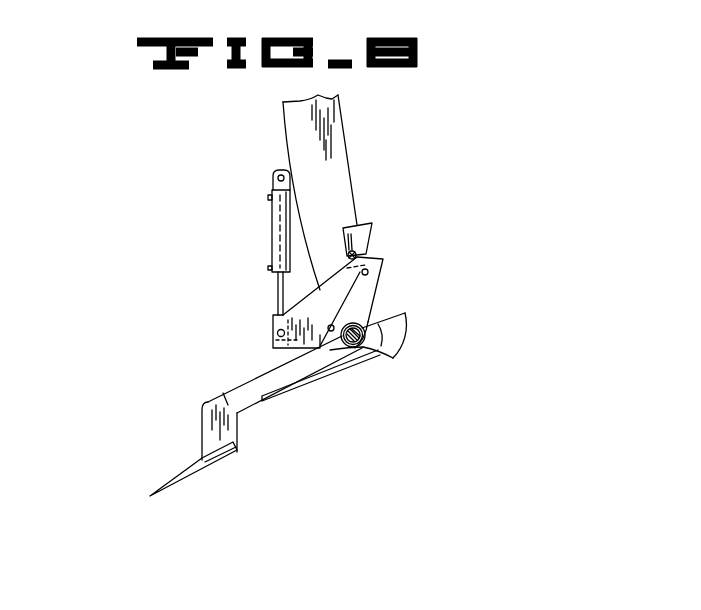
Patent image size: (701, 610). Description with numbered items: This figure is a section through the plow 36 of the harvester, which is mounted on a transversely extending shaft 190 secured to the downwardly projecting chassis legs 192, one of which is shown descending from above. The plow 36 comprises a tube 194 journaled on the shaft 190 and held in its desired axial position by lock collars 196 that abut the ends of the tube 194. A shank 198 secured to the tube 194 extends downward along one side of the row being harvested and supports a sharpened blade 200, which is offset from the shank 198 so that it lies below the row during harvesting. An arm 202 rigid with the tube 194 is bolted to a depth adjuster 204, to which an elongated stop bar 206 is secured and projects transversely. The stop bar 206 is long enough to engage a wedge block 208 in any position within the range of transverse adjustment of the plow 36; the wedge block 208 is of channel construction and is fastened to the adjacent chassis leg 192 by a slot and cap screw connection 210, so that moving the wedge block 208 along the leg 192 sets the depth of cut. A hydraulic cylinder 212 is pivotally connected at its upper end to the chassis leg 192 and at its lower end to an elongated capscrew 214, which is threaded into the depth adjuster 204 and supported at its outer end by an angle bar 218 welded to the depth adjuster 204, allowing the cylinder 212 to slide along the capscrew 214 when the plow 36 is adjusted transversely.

The plow 36 is at (188, 410).
The shaft 190 is at (393, 357).
The chassis leg 192 is at (293, 125).
The tube 194 is at (372, 317).
The lock collar 196 is at (365, 333).
The shank 198 is at (265, 377).
The sharpened blade 200 is at (187, 468).
The arm 202 is at (363, 292).
The depth adjuster 204 is at (313, 291).
The stop bar 206 is at (384, 272).
The wedge block 208 is at (372, 223).
The slot and cap screw connection 210 is at (347, 253).
The hydraulic cylinder 212 is at (272, 220).
The capscrew 214 is at (273, 329).
The angle bar 218 is at (272, 343).